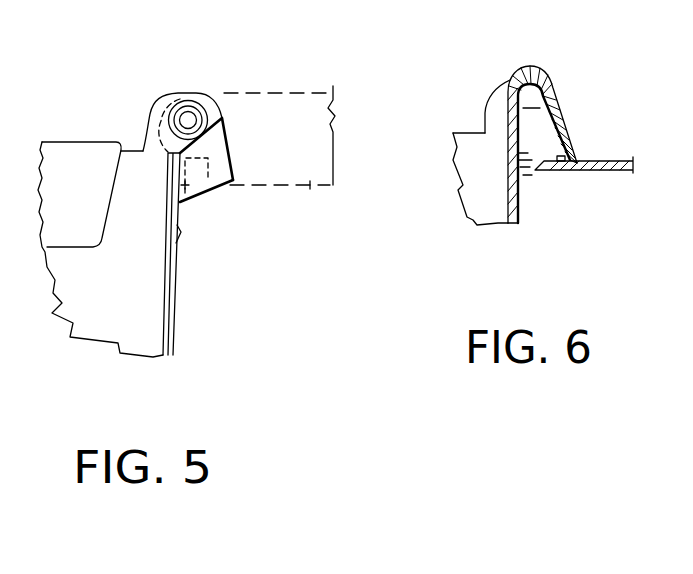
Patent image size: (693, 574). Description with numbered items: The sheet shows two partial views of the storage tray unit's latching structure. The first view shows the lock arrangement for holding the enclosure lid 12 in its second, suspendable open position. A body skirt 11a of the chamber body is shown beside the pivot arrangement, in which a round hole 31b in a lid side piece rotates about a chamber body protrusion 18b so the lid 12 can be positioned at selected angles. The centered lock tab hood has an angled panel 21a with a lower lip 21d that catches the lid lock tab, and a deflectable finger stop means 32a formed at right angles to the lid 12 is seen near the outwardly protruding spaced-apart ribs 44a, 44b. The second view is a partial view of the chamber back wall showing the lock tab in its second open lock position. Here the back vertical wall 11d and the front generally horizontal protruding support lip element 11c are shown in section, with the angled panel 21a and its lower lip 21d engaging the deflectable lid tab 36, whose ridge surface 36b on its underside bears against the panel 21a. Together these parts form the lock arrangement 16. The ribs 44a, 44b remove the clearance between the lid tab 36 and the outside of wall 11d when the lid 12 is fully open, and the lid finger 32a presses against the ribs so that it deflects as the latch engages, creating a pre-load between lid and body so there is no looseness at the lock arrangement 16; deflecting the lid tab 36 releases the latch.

In FIG. 5, the body skirt 11a is at (95, 192).
In FIG. 5, the chamber body protrusion 18b is at (185, 116).
In FIG. 5, the round hole 31b is at (200, 113).
In FIG. 5, the angled panel 21a is at (231, 148).
In FIG. 6, the angled panel 21a is at (560, 122).
In FIG. 5, the lower lip 21d is at (223, 184).
In FIG. 6, the lower lip 21d is at (565, 157).
In FIG. 5, the deflectable finger stop means 32a is at (186, 193).
In FIG. 5, the rib 44a is at (221, 254).
In FIG. 5, the rib 44b is at (176, 225).
In FIG. 5, the enclosure lid 12 is at (311, 186).
In FIG. 6, the back vertical wall 11d is at (507, 107).
In FIG. 6, the support lip element 11c is at (541, 71).
In FIG. 6, the lid tab 36 is at (625, 171).
In FIG. 6, the ridge surface 36b is at (556, 171).
In FIG. 6, the lock arrangement 16 is at (543, 271).